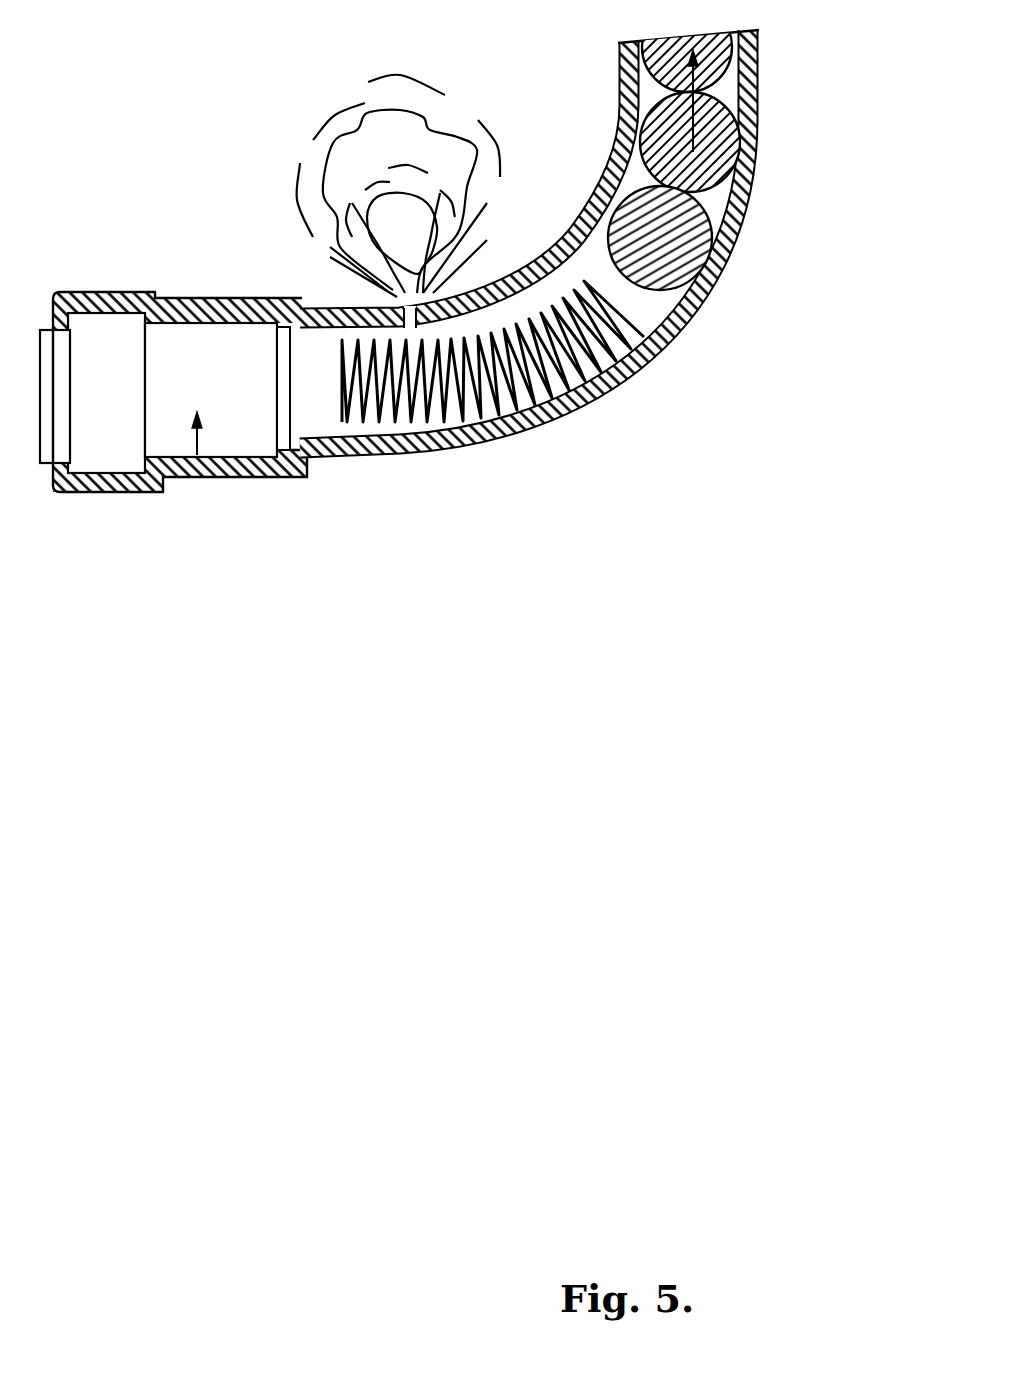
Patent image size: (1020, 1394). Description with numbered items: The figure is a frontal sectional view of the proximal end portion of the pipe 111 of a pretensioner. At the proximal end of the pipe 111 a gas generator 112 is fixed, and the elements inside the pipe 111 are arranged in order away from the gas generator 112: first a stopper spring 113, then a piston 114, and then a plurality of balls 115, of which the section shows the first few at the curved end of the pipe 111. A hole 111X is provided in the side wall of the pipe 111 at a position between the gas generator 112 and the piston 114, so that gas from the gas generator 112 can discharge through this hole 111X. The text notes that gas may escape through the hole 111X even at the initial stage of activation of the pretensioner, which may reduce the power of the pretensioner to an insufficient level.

The pipe 111 is at (400, 454).
The hole 111X is at (393, 296).
The gas generator 112 is at (208, 472).
The stopper spring 113 is at (590, 403).
The piston 114 is at (676, 240).
The balls 115 is at (706, 152).